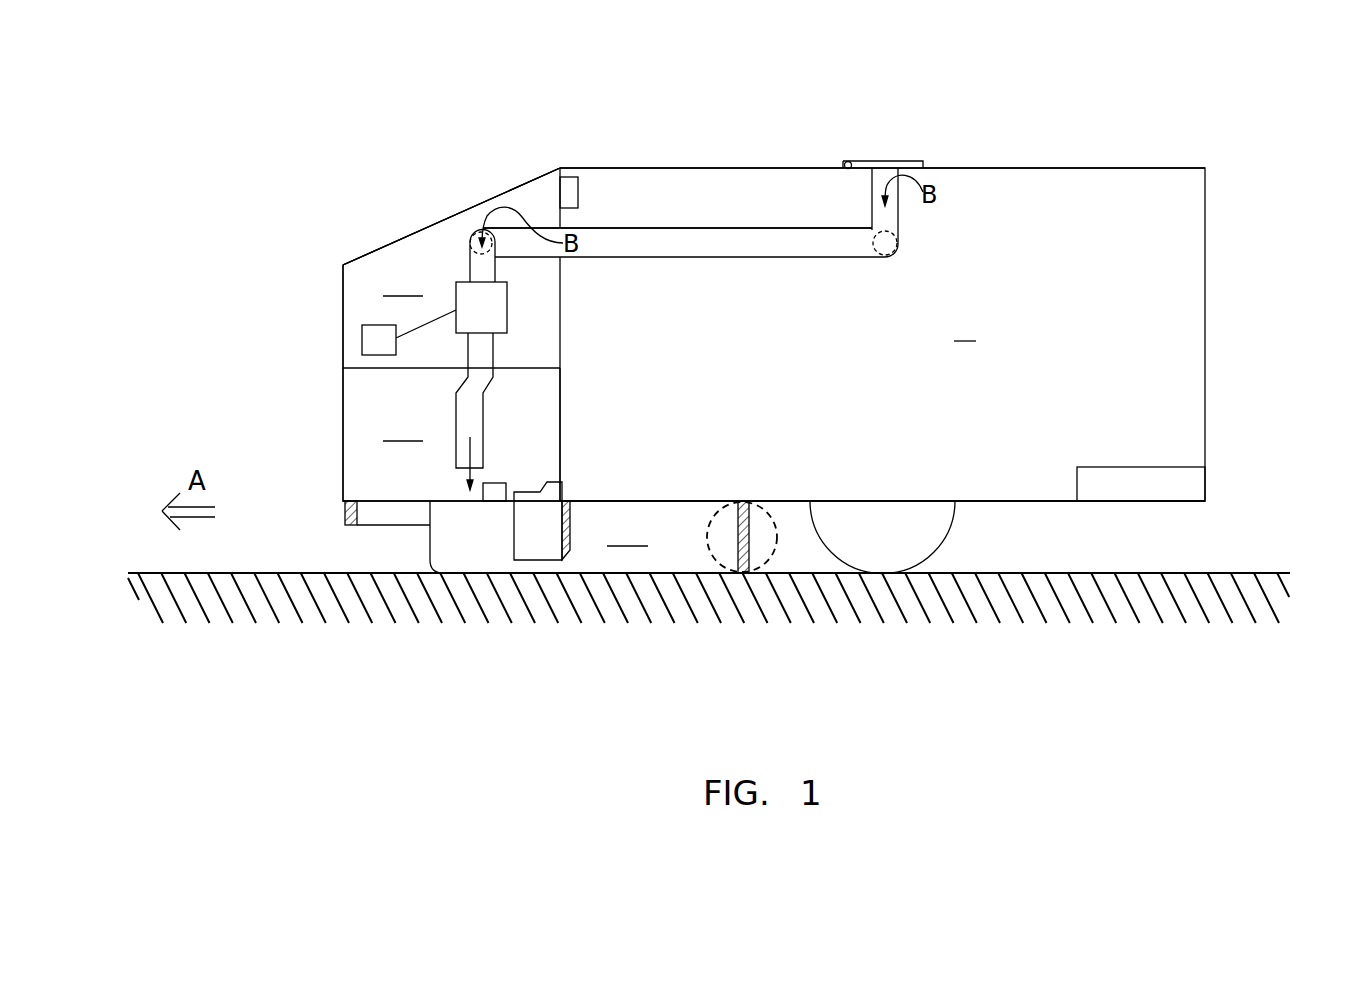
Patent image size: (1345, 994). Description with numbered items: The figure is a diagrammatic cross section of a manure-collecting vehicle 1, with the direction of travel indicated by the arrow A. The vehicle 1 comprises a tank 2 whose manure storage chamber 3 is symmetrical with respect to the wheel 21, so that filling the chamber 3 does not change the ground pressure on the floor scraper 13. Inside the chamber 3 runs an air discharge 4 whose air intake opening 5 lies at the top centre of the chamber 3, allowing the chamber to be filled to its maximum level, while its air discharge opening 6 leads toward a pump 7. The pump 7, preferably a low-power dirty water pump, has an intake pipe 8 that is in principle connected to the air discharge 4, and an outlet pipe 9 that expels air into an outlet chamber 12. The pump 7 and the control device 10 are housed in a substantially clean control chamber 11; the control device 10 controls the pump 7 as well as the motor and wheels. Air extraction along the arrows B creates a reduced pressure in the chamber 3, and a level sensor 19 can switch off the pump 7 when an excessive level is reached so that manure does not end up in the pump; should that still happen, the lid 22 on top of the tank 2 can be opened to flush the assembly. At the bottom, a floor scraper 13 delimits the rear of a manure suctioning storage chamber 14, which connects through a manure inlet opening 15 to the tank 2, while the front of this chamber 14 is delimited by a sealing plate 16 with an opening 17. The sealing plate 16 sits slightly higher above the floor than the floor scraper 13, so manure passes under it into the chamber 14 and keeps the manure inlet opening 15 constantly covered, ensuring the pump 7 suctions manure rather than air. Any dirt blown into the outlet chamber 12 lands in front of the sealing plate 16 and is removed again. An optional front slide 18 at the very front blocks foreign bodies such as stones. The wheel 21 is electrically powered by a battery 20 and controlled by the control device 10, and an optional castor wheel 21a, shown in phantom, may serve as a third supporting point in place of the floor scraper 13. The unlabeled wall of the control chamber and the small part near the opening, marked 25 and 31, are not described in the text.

The vehicle 1 is at (1245, 247).
The tank 2 is at (1083, 168).
The manure storage chamber 3 is at (965, 325).
The air discharge 4 is at (703, 229).
The air intake opening 5 is at (883, 178).
The air discharge opening 6 is at (550, 240).
The pump 7 is at (470, 295).
The intake pipe 8 is at (478, 267).
The outlet pipe 9 is at (470, 412).
The control device 10 is at (376, 340).
The control chamber 11 is at (451, 268).
The outlet chamber 12 is at (451, 434).
The floor scraper 13 is at (752, 562).
The manure suctioning storage chamber 14 is at (882, 524).
The manure inlet opening 15 is at (702, 502).
The sealing plate 16 is at (533, 530).
The opening 17 is at (563, 555).
The front slide 18 is at (345, 520).
The level sensor 19 is at (568, 193).
The battery 20 is at (1115, 478).
The wheel 21 is at (907, 555).
The castor wheel 21a is at (767, 513).
The lid 22 is at (918, 160).
The hopper wall 25 is at (392, 245).
The nozzle 31 is at (497, 487).